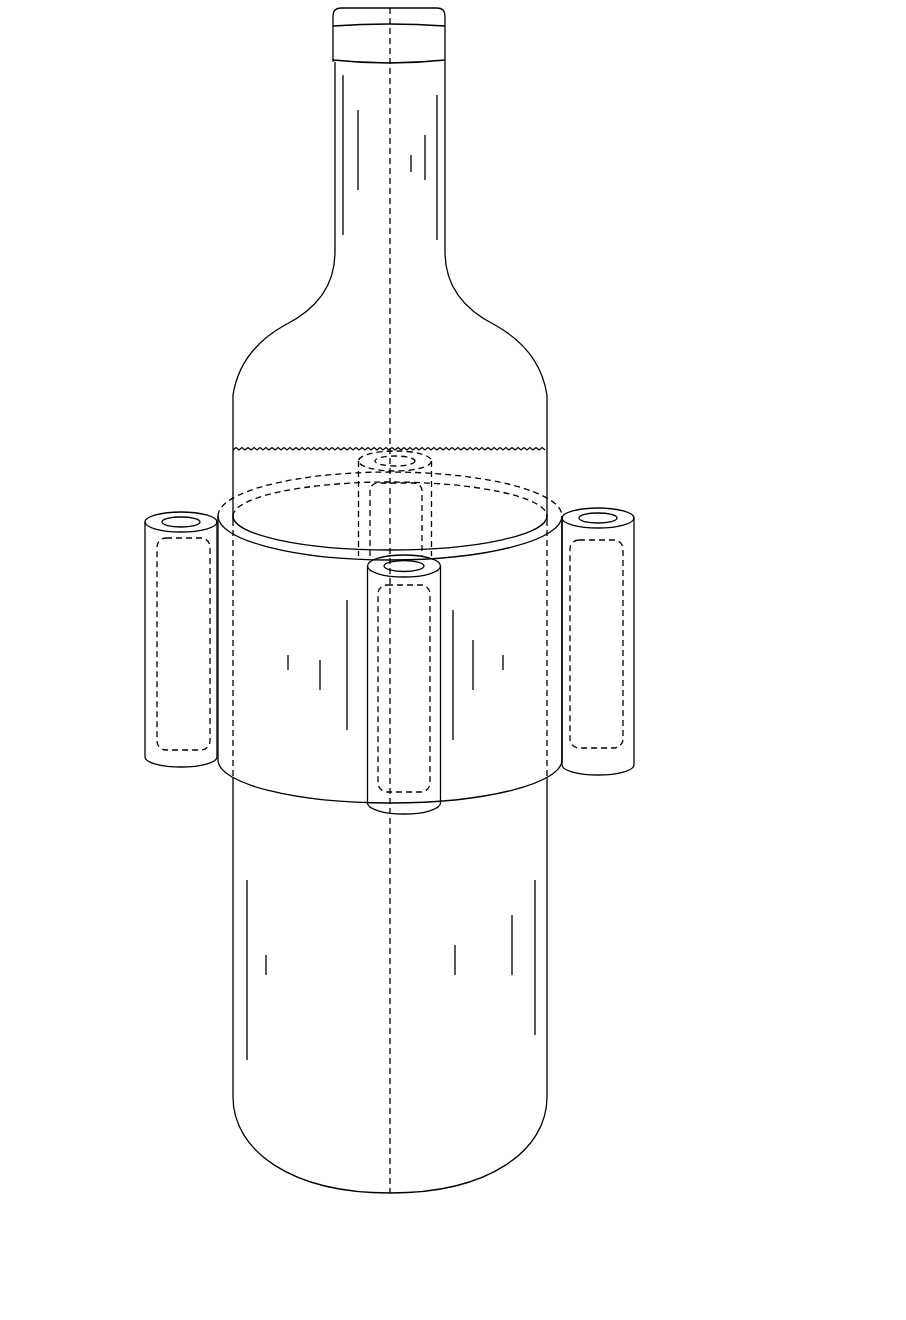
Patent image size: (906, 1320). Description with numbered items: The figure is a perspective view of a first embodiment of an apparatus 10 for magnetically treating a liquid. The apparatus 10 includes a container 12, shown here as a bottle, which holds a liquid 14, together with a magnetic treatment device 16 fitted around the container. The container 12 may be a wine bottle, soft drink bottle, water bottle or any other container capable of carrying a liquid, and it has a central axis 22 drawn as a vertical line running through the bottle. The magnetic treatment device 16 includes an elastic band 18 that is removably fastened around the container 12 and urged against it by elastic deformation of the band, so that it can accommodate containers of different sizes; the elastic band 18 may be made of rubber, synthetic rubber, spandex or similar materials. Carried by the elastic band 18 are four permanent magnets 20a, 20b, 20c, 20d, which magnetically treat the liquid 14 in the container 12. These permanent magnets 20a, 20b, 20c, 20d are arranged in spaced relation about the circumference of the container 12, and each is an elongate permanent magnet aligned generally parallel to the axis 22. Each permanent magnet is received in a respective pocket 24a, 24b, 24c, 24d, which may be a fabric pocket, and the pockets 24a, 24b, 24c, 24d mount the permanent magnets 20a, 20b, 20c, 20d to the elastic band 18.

The apparatus 10 is at (697, 118).
The container 12 is at (237, 381).
The liquid 14 is at (538, 447).
The magnetic treatment device 16 is at (254, 790).
The elastic band 18 is at (548, 777).
The permanent magnet 20a is at (431, 757).
The permanent magnet 20b is at (623, 678).
The permanent magnet 20c is at (157, 708).
The permanent magnet 20d is at (423, 537).
The axis 22 is at (390, 88).
The pocket 24a is at (421, 808).
The pocket 24b is at (636, 577).
The pocket 24c is at (145, 595).
The pocket 24d is at (433, 462).